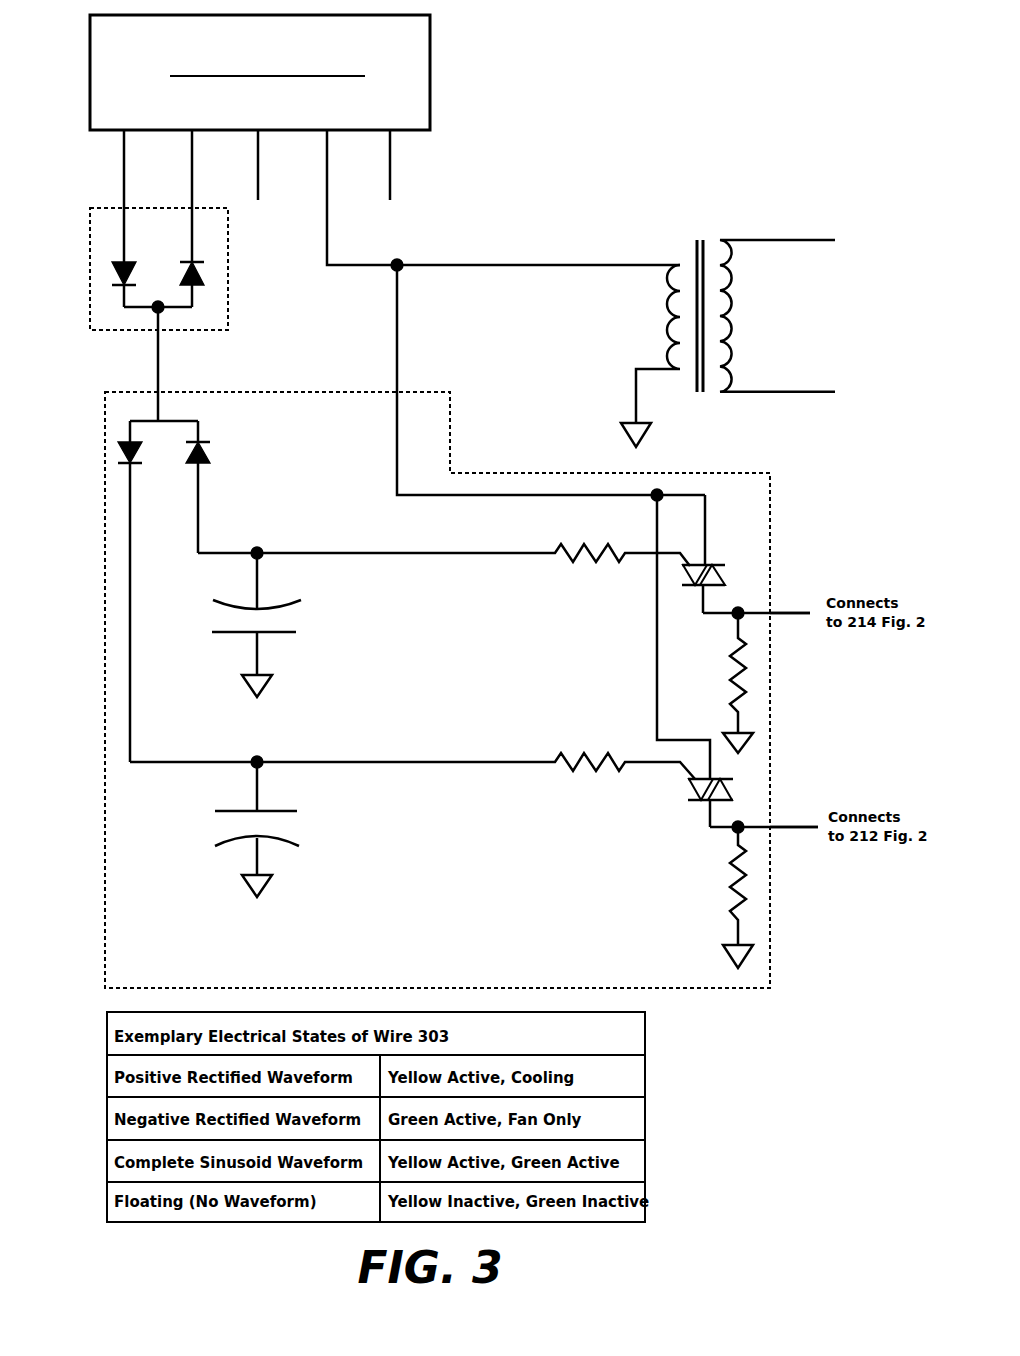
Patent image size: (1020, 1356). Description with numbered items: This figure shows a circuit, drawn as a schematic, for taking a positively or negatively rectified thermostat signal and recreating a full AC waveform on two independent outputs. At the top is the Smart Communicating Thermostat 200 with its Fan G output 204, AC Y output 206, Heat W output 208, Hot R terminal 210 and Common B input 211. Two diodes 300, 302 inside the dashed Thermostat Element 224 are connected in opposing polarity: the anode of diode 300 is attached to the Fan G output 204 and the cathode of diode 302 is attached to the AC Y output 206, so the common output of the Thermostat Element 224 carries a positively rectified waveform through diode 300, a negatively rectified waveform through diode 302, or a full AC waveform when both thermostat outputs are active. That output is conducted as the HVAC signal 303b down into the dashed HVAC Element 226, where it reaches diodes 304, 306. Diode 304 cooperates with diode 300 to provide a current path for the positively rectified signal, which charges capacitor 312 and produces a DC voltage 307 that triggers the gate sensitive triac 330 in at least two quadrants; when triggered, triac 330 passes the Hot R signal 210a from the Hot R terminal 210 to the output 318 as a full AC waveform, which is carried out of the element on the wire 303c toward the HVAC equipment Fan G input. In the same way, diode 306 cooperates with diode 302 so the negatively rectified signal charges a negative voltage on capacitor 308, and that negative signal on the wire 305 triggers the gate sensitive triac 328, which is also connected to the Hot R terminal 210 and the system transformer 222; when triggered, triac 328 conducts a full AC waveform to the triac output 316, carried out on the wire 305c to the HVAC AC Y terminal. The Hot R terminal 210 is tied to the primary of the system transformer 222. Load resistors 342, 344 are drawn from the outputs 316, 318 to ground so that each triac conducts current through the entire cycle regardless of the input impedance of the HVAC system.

The Smart Communicating Thermostat 200 is at (433, 22).
The Fan G output 204 is at (128, 136).
The AC Y output 206 is at (196, 136).
The Heat W output 208 is at (262, 136).
The Hot R terminal 210 is at (331, 136).
The Hot R signal 210a is at (394, 428).
The Common B input 211 is at (394, 136).
The system transformer 222 is at (748, 376).
The Thermostat Element 224 is at (88, 265).
The HVAC Element 226 is at (103, 648).
The diode 300 is at (112, 268).
The diode 302 is at (206, 272).
The HVAC signal 303b is at (153, 342).
The wire 303c is at (795, 831).
The diode 304 is at (115, 450).
The wire carrying negative DC signal 305 is at (405, 557).
The wire 305c is at (790, 616).
The diode 306 is at (208, 455).
The DC voltage 307 is at (375, 766).
The capacitor 308 is at (208, 623).
The capacitor 312 is at (215, 833).
The triac output 316 is at (778, 612).
The output 318 is at (778, 827).
The gate sensitive triac 328 is at (720, 578).
The gate sensitive triac 330 is at (692, 790).
The resistor 342 is at (732, 642).
The resistor 344 is at (725, 880).